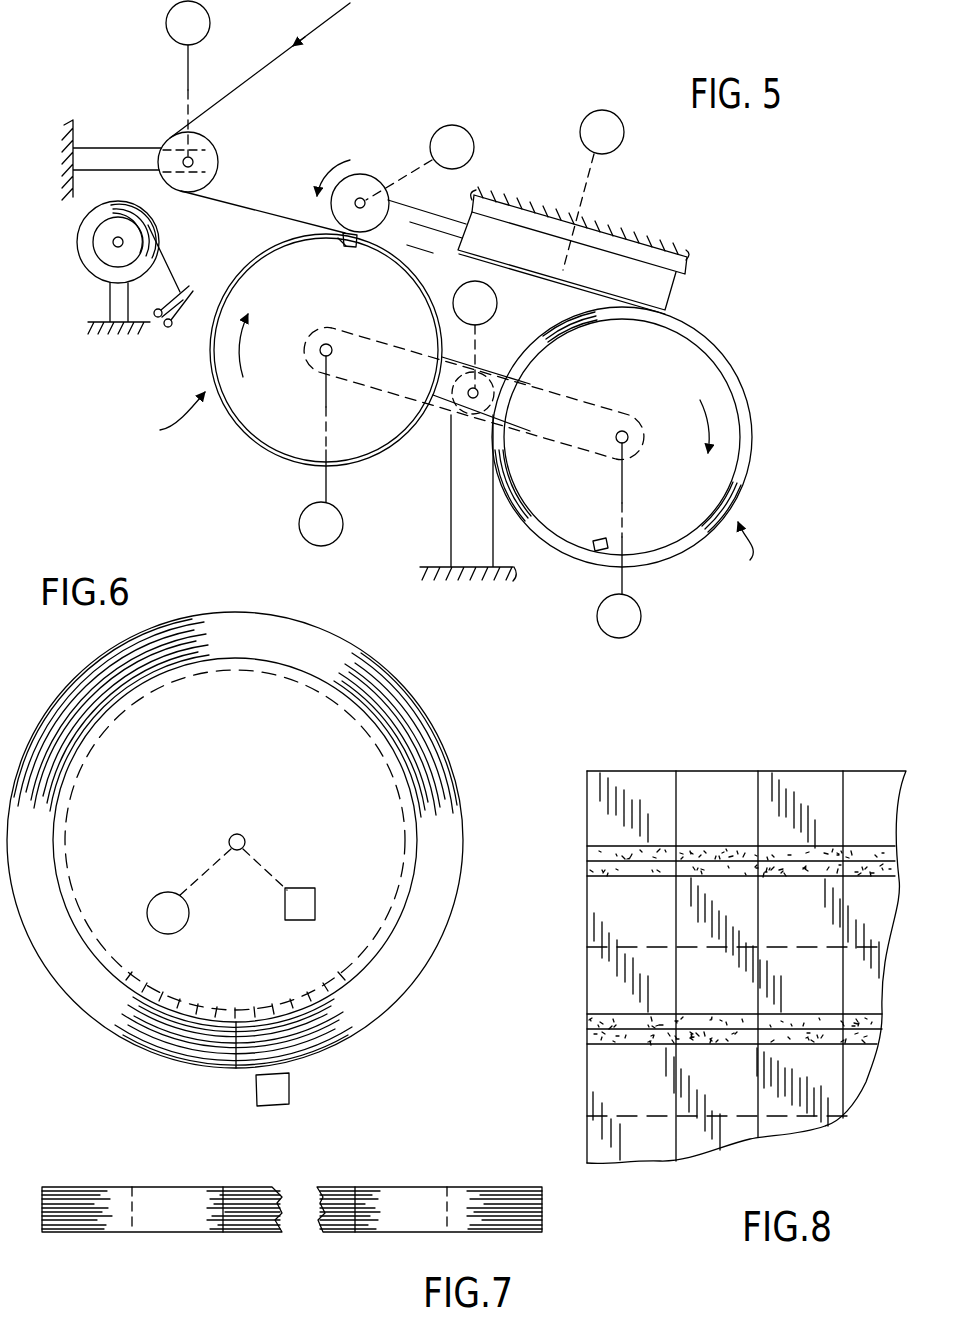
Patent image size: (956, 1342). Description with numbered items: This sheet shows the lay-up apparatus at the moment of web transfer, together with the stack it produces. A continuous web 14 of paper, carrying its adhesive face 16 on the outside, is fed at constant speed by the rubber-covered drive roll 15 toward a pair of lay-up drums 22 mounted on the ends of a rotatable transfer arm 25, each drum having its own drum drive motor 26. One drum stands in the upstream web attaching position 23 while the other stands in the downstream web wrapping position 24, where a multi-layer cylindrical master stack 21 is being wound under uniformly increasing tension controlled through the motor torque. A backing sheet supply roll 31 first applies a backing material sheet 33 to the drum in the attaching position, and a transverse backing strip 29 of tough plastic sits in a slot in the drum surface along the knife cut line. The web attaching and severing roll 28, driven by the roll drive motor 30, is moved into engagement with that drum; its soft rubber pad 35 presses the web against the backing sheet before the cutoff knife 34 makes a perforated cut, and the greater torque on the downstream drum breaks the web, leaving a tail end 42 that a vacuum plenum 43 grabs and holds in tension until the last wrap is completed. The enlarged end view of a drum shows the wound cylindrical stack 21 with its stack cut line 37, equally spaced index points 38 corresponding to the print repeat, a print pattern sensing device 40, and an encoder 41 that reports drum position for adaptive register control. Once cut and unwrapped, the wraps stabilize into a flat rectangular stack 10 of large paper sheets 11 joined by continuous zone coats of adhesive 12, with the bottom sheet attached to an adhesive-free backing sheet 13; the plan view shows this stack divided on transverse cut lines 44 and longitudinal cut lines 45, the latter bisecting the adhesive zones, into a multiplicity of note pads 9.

In FIG. 7, the note pads 9 is at (478, 1225).
In FIG. 8, the note pads 9 is at (693, 790).
In FIG. 7, the flat rectangular stack 10 is at (421, 1181).
In FIG. 8, the flat rectangular stack 10 is at (728, 799).
In FIG. 6, the paper sheets 11 is at (379, 687).
In FIG. 7, the paper sheets 11 is at (344, 1194).
In FIG. 8, the paper sheets 11 is at (603, 985).
In FIG. 8, the zone coats of adhesive 12 is at (611, 869).
In FIG. 6, the backing sheet 13 is at (69, 915).
In FIG. 7, the backing sheet 13 is at (230, 1232).
In FIG. 5, the web 14 is at (317, 28).
In FIG. 5, the drive roll 15 is at (207, 160).
In FIG. 5, the adhesive face 16 is at (222, 208).
In FIG. 5, the multi-layer cylindrical master stack 21 is at (733, 380).
In FIG. 6, the multi-layer cylindrical master stack 21 is at (413, 725).
In FIG. 5, the lay-up drum 22 is at (265, 422).
In FIG. 6, the lay-up drum 22 is at (386, 869).
In FIG. 5, the web attaching position 23 is at (168, 419).
In FIG. 5, the web wrapping position 24 is at (748, 556).
In FIG. 5, the transfer arm 25 is at (442, 397).
In FIG. 5, the drum drive motor 26 is at (343, 524).
In FIG. 6, the drum drive motor 26 is at (189, 913).
In FIG. 5, the web attaching and severing roll 28 is at (368, 180).
In FIG. 5, the backing strip 29 is at (357, 247).
In FIG. 5, the roll drive motor 30 is at (467, 131).
In FIG. 5, the backing sheet supply roll 31 is at (105, 251).
In FIG. 5, the backing material sheet 33 is at (240, 266).
In FIG. 5, the cutoff knife 34 is at (343, 246).
In FIG. 5, the rubber pad 35 is at (325, 210).
In FIG. 6, the stack cut line 37 is at (218, 1050).
In FIG. 7, the stack cut line 37 is at (42, 1203).
In FIG. 8, the stack cut line 37 is at (584, 793).
In FIG. 6, the index points 38 is at (285, 1008).
In FIG. 6, the print pattern sensing device 40 is at (289, 1088).
In FIG. 6, the encoder 41 is at (315, 905).
In FIG. 5, the tail end 42 is at (435, 253).
In FIG. 5, the vacuum plenum 43 is at (633, 292).
In FIG. 7, the transverse cut lines 44 is at (133, 1207).
In FIG. 8, the transverse cut lines 44 is at (757, 940).
In FIG. 8, the longitudinal cut lines 45 is at (693, 947).